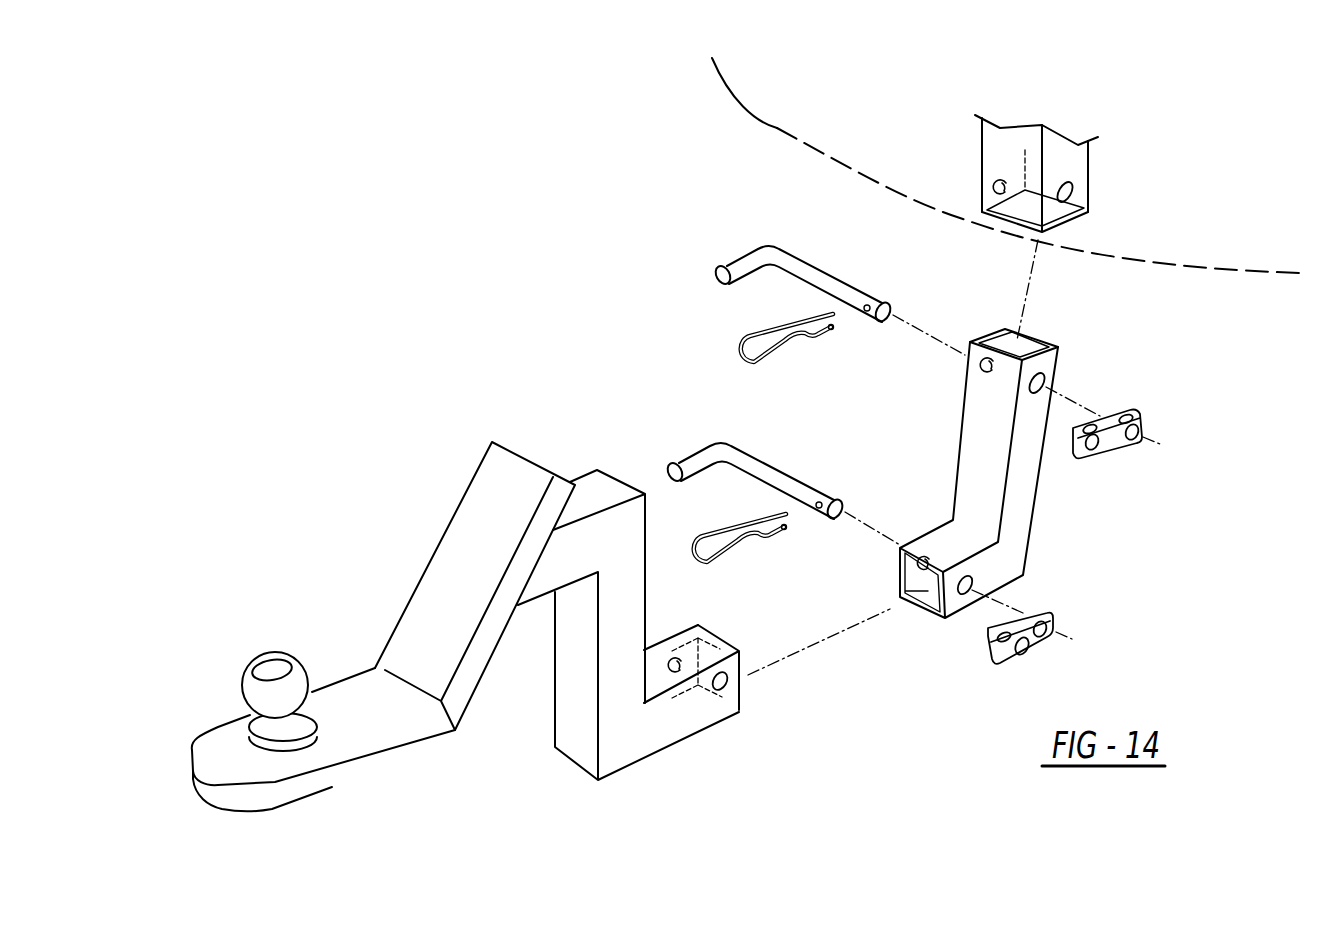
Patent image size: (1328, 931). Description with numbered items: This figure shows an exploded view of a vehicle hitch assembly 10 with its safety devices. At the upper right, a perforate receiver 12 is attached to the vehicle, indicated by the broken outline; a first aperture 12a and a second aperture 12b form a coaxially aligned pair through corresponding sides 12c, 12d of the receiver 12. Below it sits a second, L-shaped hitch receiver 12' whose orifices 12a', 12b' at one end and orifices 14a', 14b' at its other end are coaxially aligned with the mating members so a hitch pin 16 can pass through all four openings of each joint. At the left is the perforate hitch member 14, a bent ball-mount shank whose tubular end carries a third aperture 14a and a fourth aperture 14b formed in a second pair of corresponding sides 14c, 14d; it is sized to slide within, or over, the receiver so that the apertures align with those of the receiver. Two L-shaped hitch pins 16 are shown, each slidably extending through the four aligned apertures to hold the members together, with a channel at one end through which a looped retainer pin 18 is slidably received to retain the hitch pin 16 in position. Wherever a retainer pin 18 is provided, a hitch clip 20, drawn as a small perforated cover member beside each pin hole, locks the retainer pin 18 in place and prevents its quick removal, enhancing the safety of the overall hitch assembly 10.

The vehicle hitch assembly 10 is at (1235, 605).
The perforate receiver 12 is at (1023, 149).
The first aperture 12a is at (1124, 203).
The second aperture 12b is at (1026, 130).
The side of the receiver 12c is at (1070, 158).
The side of the receiver 12d is at (995, 153).
The hitch receiver 12' is at (1039, 464).
The receiver orifice 12a' is at (945, 635).
The receiver orifice 12b' is at (918, 507).
The perforate hitch member 14 is at (539, 640).
The third aperture 14a is at (798, 703).
The fourth aperture 14b is at (681, 624).
The side of the hitch member 14c is at (702, 702).
The side of the hitch member 14d is at (657, 683).
The hitch member orifice 14a' is at (1113, 373).
The hitch member orifice 14b' is at (935, 302).
The hitch pin 16 is at (750, 237).
The retainer pin 18 is at (782, 352).
The hitch clip 20 is at (1130, 458).